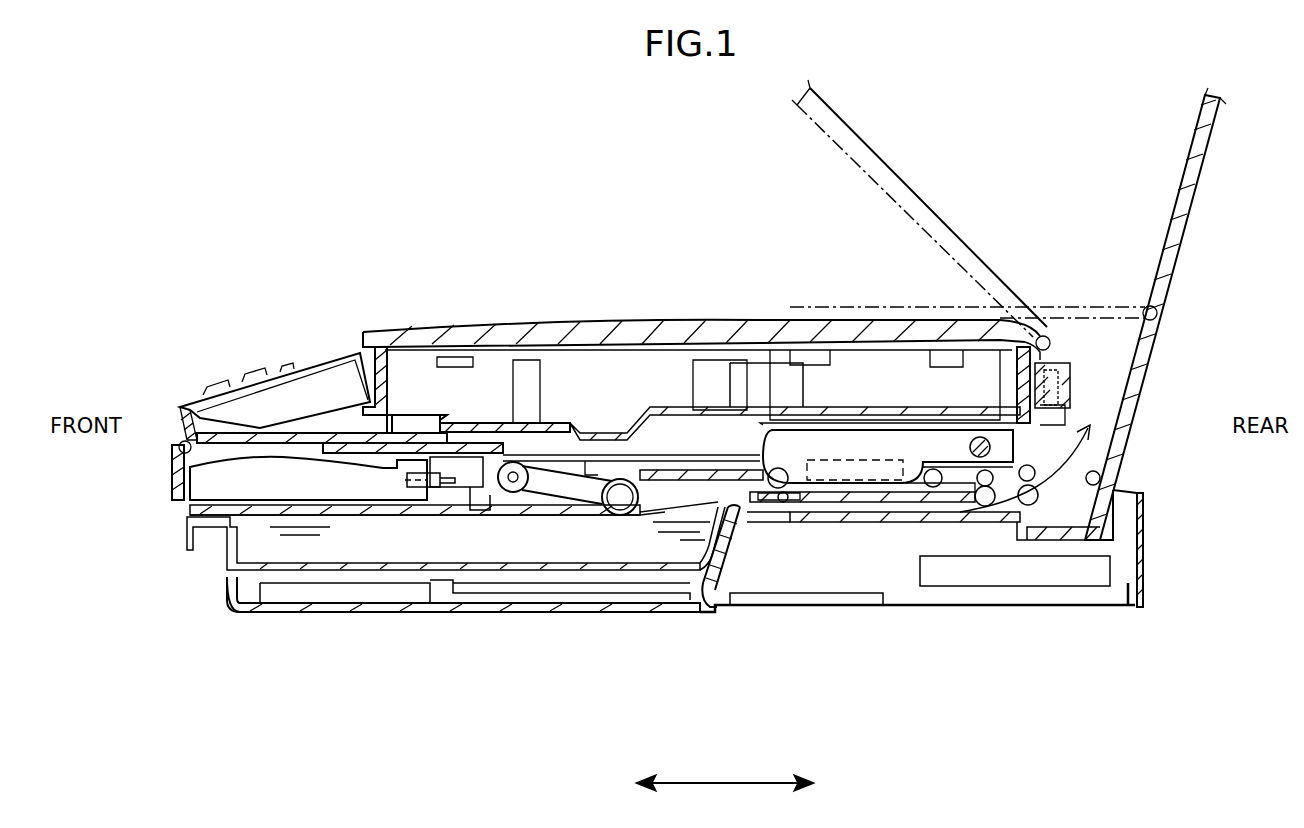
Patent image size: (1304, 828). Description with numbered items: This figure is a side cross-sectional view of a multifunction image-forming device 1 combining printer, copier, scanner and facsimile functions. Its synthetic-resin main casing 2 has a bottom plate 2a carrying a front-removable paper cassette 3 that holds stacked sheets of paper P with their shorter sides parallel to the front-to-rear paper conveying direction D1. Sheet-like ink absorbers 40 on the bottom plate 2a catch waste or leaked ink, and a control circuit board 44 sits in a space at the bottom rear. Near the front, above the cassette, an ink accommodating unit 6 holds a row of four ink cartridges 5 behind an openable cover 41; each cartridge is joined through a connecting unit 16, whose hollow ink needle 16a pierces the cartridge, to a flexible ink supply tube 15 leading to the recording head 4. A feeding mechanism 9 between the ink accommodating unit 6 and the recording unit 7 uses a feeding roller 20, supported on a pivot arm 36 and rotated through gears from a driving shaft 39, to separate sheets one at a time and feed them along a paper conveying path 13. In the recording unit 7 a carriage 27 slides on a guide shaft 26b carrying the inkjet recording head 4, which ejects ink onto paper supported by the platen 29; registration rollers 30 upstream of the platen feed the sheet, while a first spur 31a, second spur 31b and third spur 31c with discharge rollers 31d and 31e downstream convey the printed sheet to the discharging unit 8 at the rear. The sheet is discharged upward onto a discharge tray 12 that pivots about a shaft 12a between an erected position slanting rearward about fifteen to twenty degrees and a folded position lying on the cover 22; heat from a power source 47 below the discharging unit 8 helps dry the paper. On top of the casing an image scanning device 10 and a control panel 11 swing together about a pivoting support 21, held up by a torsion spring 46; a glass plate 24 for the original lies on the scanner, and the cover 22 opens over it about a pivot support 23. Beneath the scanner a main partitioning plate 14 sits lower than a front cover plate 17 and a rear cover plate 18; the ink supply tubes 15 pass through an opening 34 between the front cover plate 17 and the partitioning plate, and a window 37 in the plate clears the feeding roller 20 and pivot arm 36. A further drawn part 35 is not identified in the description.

The image-forming device 1 is at (441, 240).
The main casing 2 is at (1150, 532).
The bottom plate 2a is at (250, 610).
The paper cassette 3 is at (612, 573).
The recording head 4 is at (845, 478).
The ink cartridges 5 is at (318, 490).
The ink accommodating unit 6 is at (377, 518).
The recording unit 7 is at (905, 500).
The discharging unit 8 is at (1100, 478).
The feeding mechanism 9 is at (568, 505).
The image scanning device 10 is at (1035, 338).
The control panel 11 is at (300, 362).
The discharge tray 12 is at (822, 318).
The shaft 12a is at (1157, 312).
The paper conveying path 13 is at (700, 582).
The main partitioning plate 14 is at (690, 482).
The ink supply tubes 15 is at (768, 492).
The connecting units 16 is at (458, 483).
The ink needle 16a is at (410, 480).
The front cover plate 17 is at (406, 446).
The rear cover plate 18 is at (805, 430).
The feeding roller 20 is at (648, 578).
The pivoting support 21 is at (1067, 393).
The cover 22 is at (660, 330).
The pivot support 23 is at (1052, 344).
The glass plate 24 is at (580, 345).
The guide shaft 26b is at (978, 440).
The carriage 27 is at (905, 450).
The platen 29 is at (860, 500).
The registration rollers 30 is at (790, 505).
The first spur 31a is at (935, 490).
The second spur 31b is at (980, 510).
The third spur 31c is at (1035, 508).
The discharge roller 31d is at (990, 510).
The discharge roller 31e is at (1030, 510).
The opening 34 is at (505, 495).
The guide shaft 35 is at (740, 458).
The pivot arm 36 is at (548, 490).
The window 37 is at (640, 480).
The driving shaft 39 is at (510, 470).
The ink absorbers 40 is at (318, 595).
The cover 41 is at (188, 465).
The circuit board 44 is at (840, 600).
The torsion spring 46 is at (1060, 417).
The power source 47 is at (1105, 570).
The paper P is at (1105, 455).
The paper conveying direction D1 is at (725, 797).